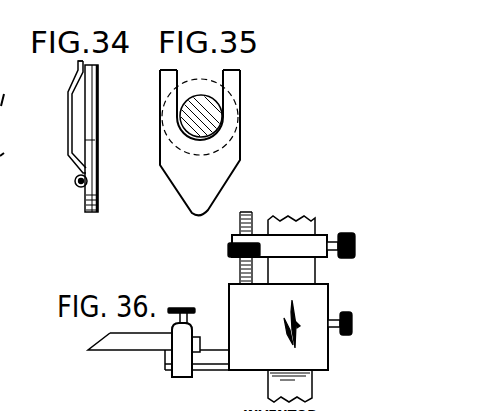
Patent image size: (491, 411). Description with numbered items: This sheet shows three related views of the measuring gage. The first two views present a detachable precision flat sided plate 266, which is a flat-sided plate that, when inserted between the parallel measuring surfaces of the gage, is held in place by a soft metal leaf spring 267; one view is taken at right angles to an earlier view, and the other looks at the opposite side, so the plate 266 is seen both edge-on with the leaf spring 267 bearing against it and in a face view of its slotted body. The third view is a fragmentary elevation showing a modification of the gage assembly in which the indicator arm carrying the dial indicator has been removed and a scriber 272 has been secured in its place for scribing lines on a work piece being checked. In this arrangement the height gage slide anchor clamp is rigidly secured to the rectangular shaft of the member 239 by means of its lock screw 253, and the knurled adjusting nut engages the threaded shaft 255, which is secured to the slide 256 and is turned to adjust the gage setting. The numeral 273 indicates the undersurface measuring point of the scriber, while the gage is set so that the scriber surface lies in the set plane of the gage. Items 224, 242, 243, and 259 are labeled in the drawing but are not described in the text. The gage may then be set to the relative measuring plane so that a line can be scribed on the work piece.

In FIG. 36, the support bracket 224 is at (207, 347).
In FIG. 36, the member 239 is at (273, 388).
In FIG. 36, the valve body 242 is at (180, 377).
In FIG. 36, the valve handle 243 is at (203, 293).
In FIG. 36, the lock screw 253 is at (347, 335).
In FIG. 36, the threaded shaft 255 is at (250, 212).
In FIG. 36, the slide 256 is at (282, 352).
In FIG. 36, the clamp bar nut 259 is at (232, 250).
In FIG. 34, the detachable precision flat sided plate 266 is at (95, 198).
In FIG. 35, the detachable precision flat sided plate 266 is at (210, 213).
In FIG. 34, the soft metal leaf spring 267 is at (72, 115).
In FIG. 36, the scriber 272 is at (152, 342).
In FIG. 36, the undersurface measuring point 273 is at (115, 350).